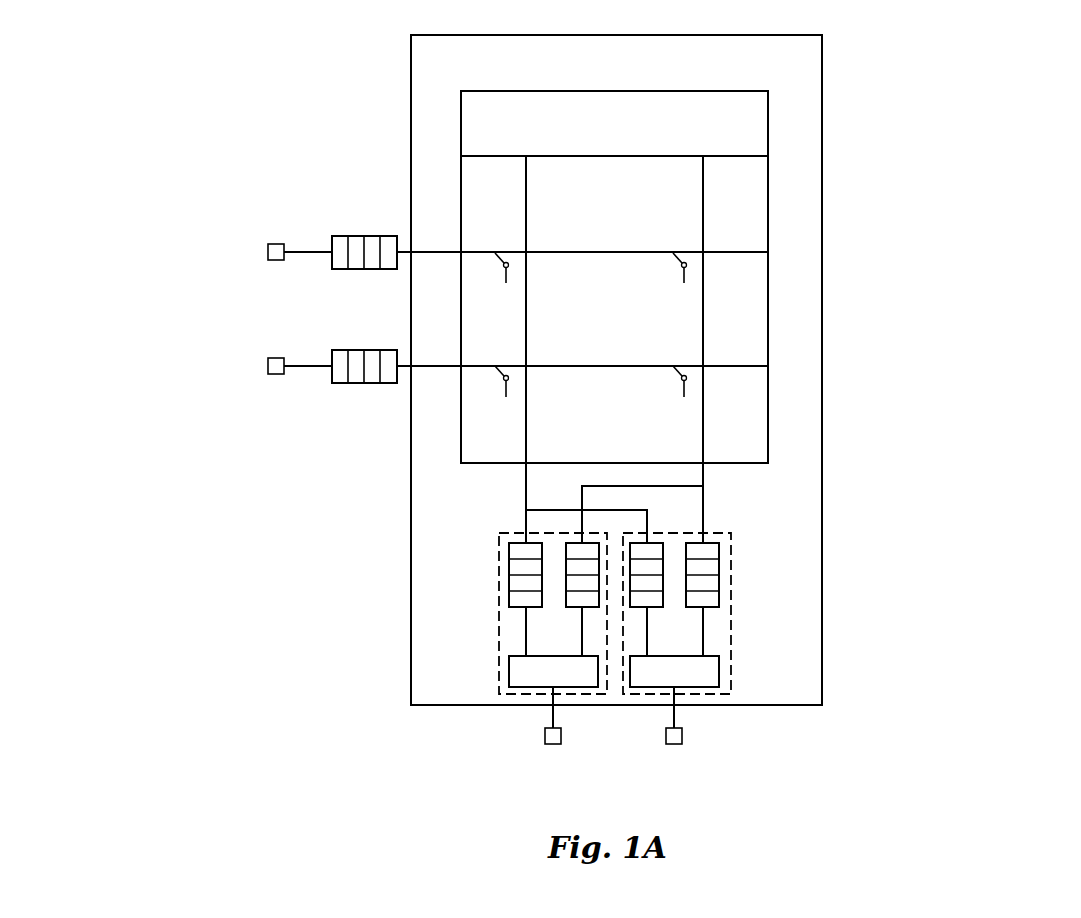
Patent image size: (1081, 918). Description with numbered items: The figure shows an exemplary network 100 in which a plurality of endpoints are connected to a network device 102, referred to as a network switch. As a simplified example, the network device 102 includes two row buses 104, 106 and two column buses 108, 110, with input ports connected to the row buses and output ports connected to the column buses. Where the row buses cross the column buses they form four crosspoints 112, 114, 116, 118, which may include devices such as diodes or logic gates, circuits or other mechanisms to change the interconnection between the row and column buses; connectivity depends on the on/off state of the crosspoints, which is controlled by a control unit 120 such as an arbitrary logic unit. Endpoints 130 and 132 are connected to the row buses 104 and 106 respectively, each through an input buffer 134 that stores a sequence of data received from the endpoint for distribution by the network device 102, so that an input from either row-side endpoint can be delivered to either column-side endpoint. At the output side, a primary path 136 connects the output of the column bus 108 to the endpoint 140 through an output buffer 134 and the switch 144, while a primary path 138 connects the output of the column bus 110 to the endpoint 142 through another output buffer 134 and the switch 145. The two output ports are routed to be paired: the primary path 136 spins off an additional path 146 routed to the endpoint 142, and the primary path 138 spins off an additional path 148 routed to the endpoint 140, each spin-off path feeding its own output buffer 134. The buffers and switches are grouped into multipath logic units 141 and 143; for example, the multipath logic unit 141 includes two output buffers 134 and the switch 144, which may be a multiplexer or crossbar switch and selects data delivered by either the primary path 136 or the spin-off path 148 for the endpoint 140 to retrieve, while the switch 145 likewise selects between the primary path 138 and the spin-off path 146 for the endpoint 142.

The network 100 is at (995, 64).
The network device 102 is at (409, 124).
The row bus 104 is at (768, 253).
The row bus 106 is at (768, 366).
The column bus 108 is at (526, 305).
The column bus 110 is at (704, 192).
The crosspoint 112 is at (525, 285).
The crosspoint 114 is at (703, 285).
The crosspoint 116 is at (525, 397).
The crosspoint 118 is at (703, 397).
The control unit 120 is at (614, 277).
The endpoint 130 is at (265, 253).
The endpoint 132 is at (265, 366).
The buffer 134 is at (360, 236).
The primary path 136 is at (520, 522).
The primary path 138 is at (705, 518).
The endpoint 140 is at (545, 733).
The multipath logic unit 141 is at (499, 583).
The endpoint 142 is at (682, 735).
The multipath logic unit 143 is at (733, 580).
The switch 144 is at (553, 647).
The switch 145 is at (674, 647).
The additional path 146 is at (568, 508).
The additional path 148 is at (705, 481).